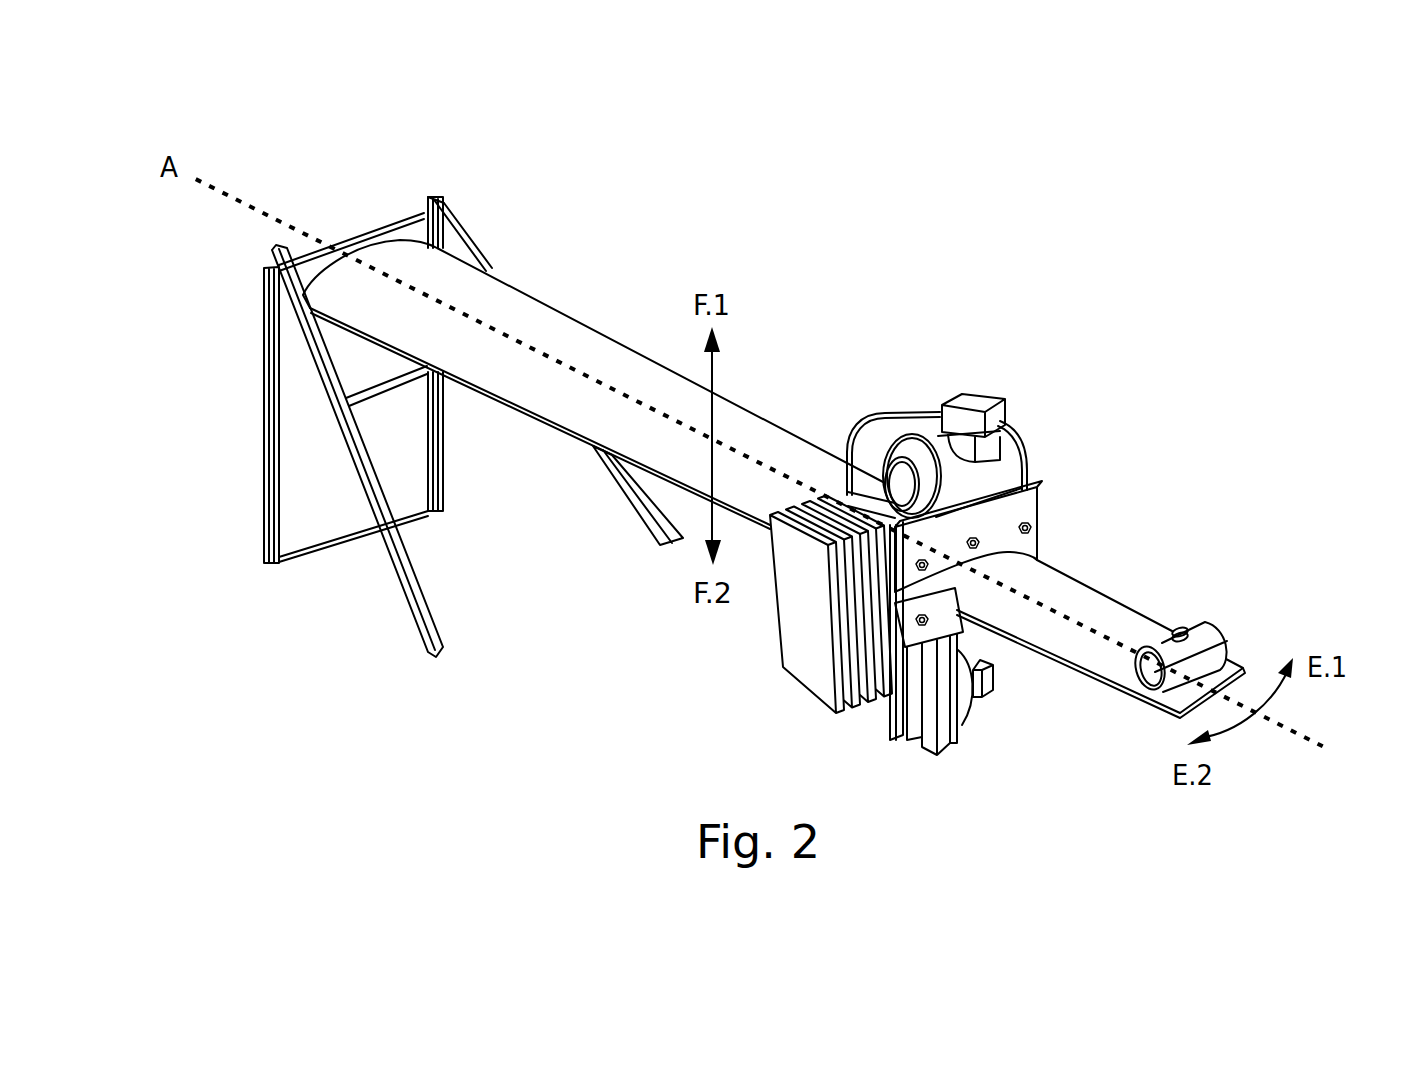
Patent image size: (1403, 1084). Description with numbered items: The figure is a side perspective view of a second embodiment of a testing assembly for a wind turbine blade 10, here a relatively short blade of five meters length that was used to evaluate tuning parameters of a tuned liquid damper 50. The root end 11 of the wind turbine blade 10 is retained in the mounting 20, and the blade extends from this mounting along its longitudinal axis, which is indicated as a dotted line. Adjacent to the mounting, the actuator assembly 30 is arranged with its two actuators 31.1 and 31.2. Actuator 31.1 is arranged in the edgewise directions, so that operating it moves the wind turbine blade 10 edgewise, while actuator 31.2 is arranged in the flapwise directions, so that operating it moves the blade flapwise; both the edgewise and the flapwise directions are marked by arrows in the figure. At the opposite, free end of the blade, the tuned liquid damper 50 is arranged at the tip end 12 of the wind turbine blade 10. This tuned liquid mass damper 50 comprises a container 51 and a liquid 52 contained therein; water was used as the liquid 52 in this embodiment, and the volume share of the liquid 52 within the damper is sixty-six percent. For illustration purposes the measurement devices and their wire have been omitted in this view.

The wind turbine blade 10 is at (808, 467).
The root end 11 is at (468, 303).
The tip end 12 is at (1235, 665).
The mounting 20 is at (321, 263).
The actuator assembly 30 is at (940, 618).
The actuator 31.1 is at (970, 405).
The actuator 31.2 is at (992, 683).
The tuned liquid damper 50 is at (1196, 558).
The container 51 is at (1193, 660).
The liquid 52 is at (1177, 632).